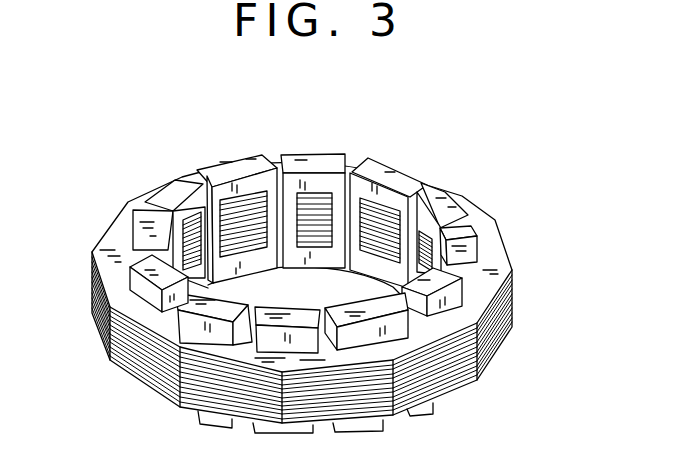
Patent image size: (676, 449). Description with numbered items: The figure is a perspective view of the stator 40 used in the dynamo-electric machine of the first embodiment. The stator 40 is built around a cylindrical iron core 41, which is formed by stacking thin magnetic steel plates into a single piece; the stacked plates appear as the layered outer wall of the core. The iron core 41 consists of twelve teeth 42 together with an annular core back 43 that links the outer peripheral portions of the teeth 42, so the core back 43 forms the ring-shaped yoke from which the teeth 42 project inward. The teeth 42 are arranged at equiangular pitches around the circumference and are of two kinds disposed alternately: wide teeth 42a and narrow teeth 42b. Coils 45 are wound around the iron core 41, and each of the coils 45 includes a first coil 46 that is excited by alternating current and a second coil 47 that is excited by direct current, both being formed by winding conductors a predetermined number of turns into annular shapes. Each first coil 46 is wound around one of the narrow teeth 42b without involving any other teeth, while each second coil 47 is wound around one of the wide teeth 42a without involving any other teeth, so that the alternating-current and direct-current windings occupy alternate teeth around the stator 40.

The stator 40 is at (329, 267).
The iron core 41 is at (359, 297).
The teeth 42 is at (366, 227).
The wide teeth 42a is at (378, 217).
The narrow teeth 42b is at (447, 237).
The core back 43 is at (512, 302).
The coils 45 is at (233, 158).
The first coil 46 is at (463, 200).
The second coil 47 is at (420, 178).